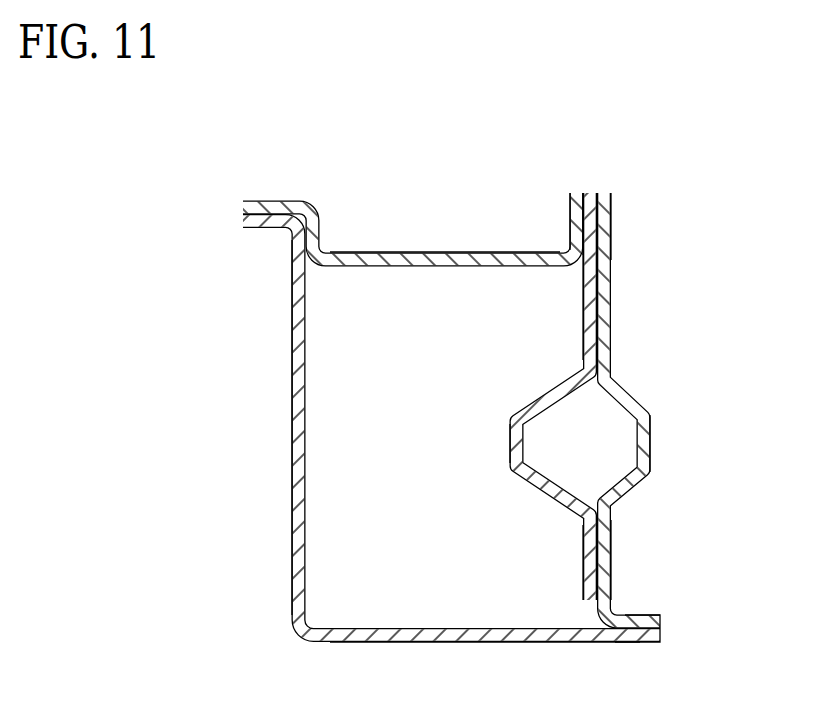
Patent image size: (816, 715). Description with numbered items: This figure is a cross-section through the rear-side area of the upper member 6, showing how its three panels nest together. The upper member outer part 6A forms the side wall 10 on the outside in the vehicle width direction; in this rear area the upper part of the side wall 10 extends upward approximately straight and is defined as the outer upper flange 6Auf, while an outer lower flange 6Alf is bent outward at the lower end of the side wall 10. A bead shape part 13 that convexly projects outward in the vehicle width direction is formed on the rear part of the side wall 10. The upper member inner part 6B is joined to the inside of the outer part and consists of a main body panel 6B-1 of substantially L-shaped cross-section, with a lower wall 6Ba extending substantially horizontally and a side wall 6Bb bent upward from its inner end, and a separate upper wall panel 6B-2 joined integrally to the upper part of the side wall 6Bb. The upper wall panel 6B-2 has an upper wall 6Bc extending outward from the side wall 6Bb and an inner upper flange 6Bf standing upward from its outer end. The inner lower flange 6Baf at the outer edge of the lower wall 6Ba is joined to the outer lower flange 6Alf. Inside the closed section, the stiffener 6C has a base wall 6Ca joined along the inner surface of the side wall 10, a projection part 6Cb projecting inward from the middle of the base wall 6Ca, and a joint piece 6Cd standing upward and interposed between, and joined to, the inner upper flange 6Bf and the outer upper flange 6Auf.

The upper member 6 is at (634, 172).
The upper member outer part 6A is at (608, 346).
The outer upper flange 6Auf is at (607, 215).
The outer lower flange 6Alf is at (641, 617).
The upper member inner part 6B is at (408, 357).
The main body panel 6B-1 is at (292, 403).
The upper wall panel 6B-2 is at (390, 250).
The lower wall 6Ba is at (477, 642).
The inner lower flange 6Baf is at (637, 643).
The side wall 6Bb is at (292, 500).
The upper wall 6Bc is at (470, 252).
The inner upper flange 6Bf is at (573, 193).
The stiffener 6C is at (588, 494).
The base wall 6Ca is at (583, 545).
The projection part 6Cb is at (506, 447).
The joint piece 6Cd is at (598, 230).
The side wall 10 is at (610, 548).
The bead shape part 13 is at (653, 433).